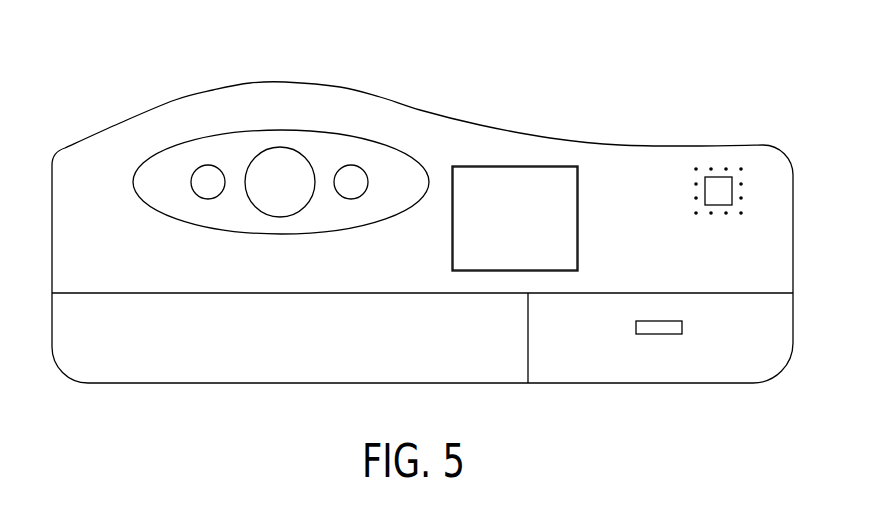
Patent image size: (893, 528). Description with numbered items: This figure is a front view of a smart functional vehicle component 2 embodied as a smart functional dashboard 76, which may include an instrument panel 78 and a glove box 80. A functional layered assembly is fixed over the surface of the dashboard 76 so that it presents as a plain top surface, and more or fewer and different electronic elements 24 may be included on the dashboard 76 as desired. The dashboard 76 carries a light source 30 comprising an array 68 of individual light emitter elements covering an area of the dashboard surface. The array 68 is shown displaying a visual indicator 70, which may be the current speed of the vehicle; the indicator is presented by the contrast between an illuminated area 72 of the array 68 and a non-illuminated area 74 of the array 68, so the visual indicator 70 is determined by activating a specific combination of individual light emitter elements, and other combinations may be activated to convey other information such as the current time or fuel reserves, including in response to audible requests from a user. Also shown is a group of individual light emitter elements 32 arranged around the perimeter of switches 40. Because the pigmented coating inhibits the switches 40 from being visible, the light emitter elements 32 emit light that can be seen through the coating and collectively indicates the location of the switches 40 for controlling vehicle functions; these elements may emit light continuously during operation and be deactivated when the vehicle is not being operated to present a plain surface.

The smart functional vehicle component 2 is at (422, 209).
The smart functional dashboard 76 is at (536, 72).
The glove box 80 is at (757, 350).
The instrument panel 78 is at (228, 153).
The light source 30 is at (648, 157).
The array 68 is at (555, 157).
The non-illuminated area 74 is at (565, 248).
The visual indicator 70 is at (552, 153).
The illuminated area 72 is at (535, 187).
The individual light emitter elements 32 is at (764, 191).
The switches 40 is at (720, 228).
The electronic elements 24 is at (718, 190).